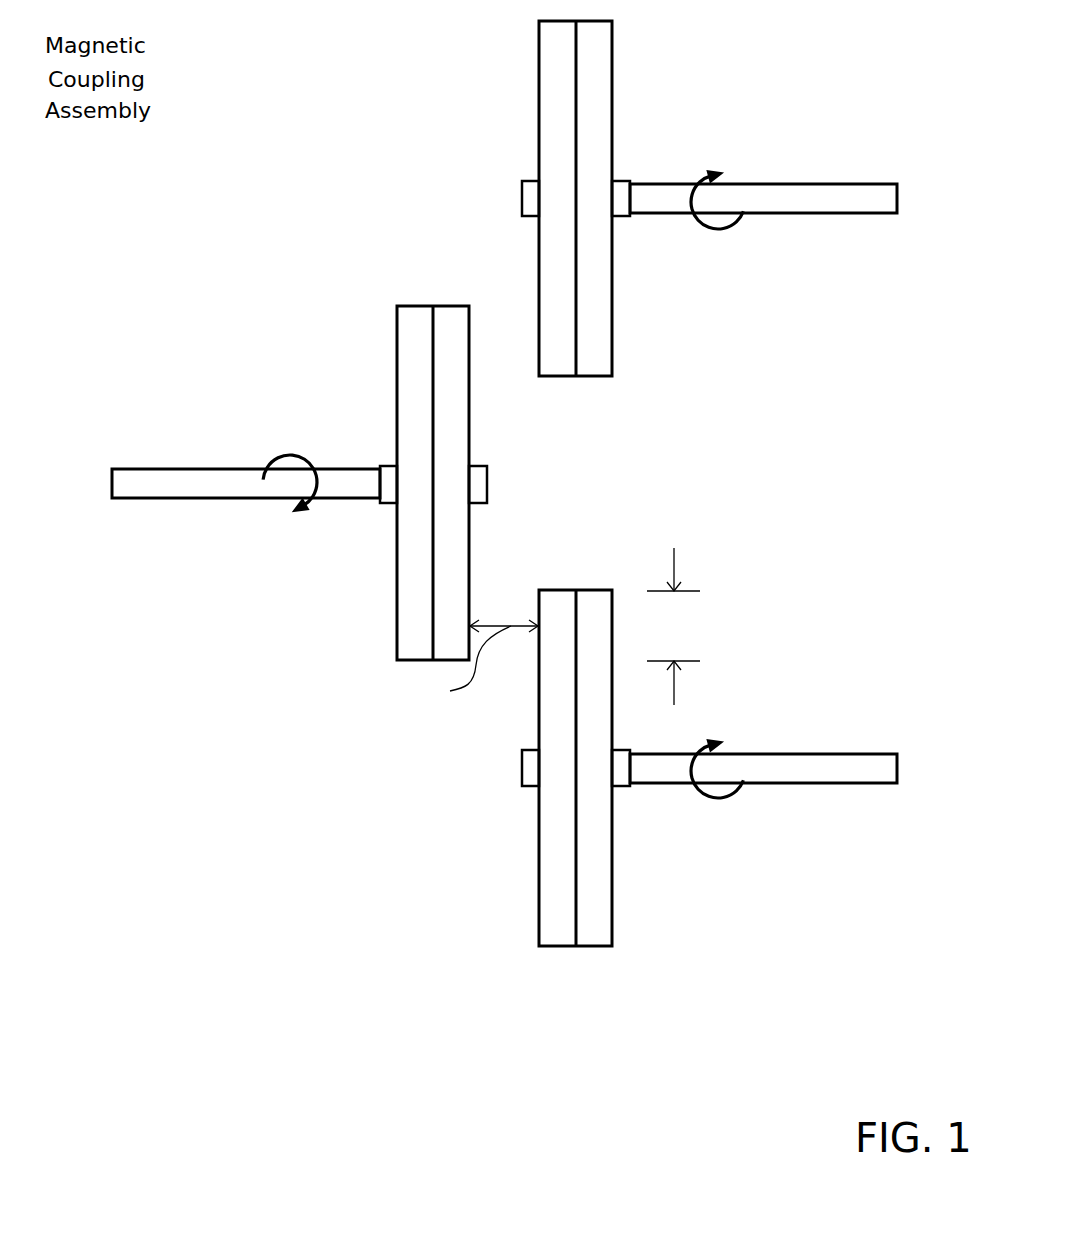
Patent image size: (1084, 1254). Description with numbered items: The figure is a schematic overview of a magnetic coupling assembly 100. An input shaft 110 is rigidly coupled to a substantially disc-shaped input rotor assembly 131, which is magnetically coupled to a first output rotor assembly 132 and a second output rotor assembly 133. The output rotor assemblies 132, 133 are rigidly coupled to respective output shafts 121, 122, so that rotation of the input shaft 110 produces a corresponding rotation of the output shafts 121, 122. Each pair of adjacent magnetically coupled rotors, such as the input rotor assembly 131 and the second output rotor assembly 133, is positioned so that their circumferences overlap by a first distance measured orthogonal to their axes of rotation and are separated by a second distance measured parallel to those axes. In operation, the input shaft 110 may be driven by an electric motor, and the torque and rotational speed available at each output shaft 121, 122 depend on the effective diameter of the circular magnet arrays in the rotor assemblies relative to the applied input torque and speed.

The magnetic coupling assembly 100 is at (397, 127).
The input shaft 110 is at (240, 487).
The output shaft 121 is at (768, 197).
The output shaft 122 is at (768, 767).
The input rotor assembly 131 is at (396, 376).
The first magnetic rotor assembly 132 is at (613, 305).
The second magnetic rotor assembly 133 is at (613, 877).